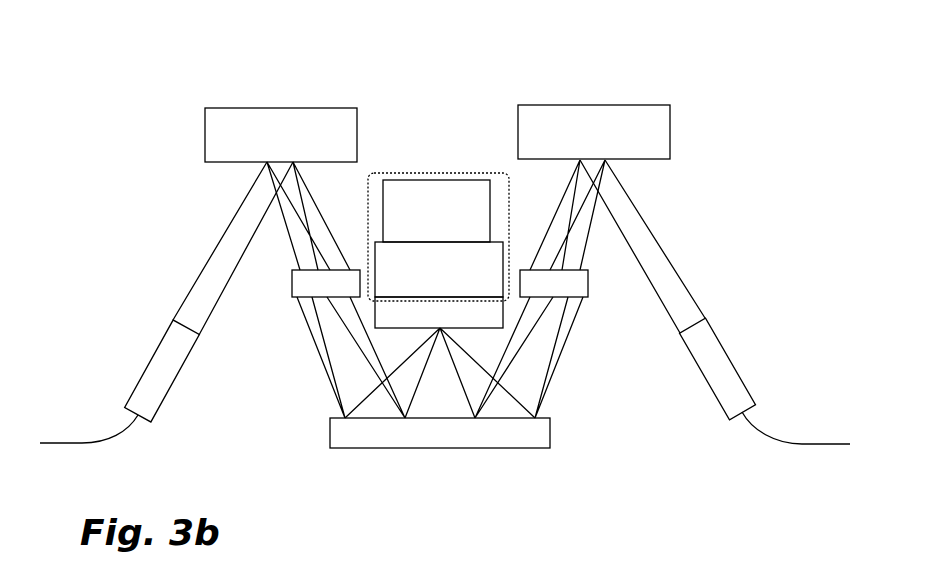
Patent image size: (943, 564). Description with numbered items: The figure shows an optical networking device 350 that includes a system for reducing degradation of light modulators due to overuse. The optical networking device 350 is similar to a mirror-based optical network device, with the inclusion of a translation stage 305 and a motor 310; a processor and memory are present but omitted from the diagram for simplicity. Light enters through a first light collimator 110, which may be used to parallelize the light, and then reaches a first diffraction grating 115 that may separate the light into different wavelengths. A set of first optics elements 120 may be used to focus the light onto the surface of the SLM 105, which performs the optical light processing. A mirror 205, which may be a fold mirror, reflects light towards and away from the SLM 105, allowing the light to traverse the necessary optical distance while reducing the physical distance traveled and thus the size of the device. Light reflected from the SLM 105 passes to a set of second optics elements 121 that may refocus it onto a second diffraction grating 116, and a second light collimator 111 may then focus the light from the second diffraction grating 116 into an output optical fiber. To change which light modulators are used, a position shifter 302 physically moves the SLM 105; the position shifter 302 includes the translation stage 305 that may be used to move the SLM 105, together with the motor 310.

The optical networking device 350 is at (143, 47).
The second diffraction grating 116 is at (223, 108).
The first diffraction grating 115 is at (648, 105).
The second optics elements 121 is at (292, 283).
The first optics elements 120 is at (588, 281).
The position shifter 302 is at (413, 173).
The motor 310 is at (437, 179).
The translation stage 305 is at (497, 240).
The SLM 105 is at (443, 329).
The mirror 205 is at (527, 448).
The second light collimator 111 is at (150, 362).
The first light collimator 110 is at (728, 357).